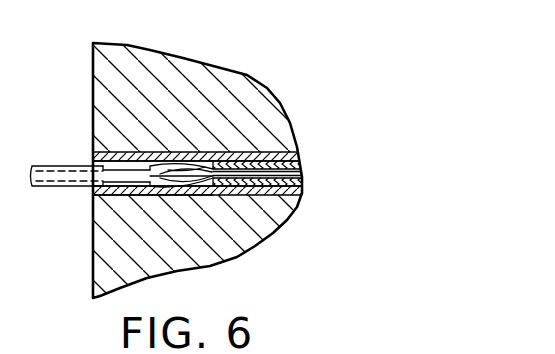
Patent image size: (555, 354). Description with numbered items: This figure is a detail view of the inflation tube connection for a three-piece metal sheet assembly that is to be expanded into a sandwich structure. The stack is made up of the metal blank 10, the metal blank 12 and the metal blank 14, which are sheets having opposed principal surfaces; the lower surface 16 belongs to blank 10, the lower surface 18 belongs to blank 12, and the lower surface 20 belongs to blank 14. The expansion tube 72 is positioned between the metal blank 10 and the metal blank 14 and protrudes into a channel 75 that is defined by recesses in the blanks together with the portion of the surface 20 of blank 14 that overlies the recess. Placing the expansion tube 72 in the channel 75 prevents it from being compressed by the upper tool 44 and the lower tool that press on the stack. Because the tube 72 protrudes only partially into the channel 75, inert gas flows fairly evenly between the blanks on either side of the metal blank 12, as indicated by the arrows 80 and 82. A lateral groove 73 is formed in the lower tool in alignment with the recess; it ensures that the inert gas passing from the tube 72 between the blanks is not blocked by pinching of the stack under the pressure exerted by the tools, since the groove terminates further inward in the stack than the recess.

The upper tool 44 is at (215, 75).
The channel 75 is at (234, 151).
The lateral groove 73 is at (280, 195).
The metal blank 12 is at (258, 178).
The metal blank 14 is at (124, 152).
The metal blank 10 is at (131, 196).
The expansion tube 72 is at (57, 190).
The lower principal surface 16 is at (103, 200).
The arrow 80 is at (156, 174).
The lower principal surface 20 is at (203, 172).
The arrow 82 is at (168, 197).
The lower principal surface 18 is at (210, 190).